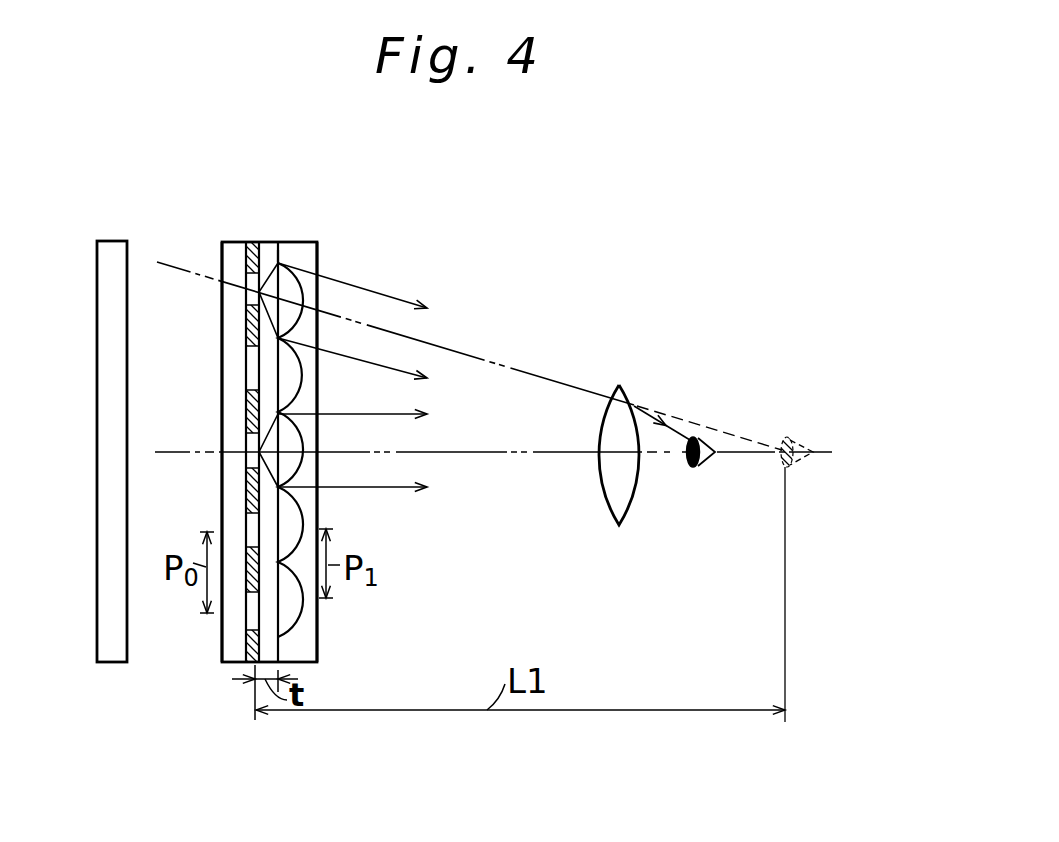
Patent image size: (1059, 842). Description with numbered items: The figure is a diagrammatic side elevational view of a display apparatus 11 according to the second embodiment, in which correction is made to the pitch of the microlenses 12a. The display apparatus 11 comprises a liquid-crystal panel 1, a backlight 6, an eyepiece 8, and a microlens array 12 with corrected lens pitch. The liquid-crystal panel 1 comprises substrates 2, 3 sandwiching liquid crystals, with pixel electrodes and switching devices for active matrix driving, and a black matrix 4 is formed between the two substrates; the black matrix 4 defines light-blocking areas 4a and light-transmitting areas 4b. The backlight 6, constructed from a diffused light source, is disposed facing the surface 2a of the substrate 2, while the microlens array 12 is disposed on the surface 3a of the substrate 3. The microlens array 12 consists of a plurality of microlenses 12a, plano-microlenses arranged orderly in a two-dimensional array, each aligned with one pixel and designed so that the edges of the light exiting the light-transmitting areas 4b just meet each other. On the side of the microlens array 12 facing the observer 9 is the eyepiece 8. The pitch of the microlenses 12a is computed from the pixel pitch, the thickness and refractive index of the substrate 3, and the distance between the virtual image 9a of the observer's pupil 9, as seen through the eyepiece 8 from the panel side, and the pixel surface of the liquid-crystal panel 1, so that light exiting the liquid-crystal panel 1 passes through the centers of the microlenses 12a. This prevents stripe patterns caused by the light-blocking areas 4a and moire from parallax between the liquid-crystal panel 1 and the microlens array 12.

The liquid-crystal panel 1 is at (286, 389).
The substrate 2 is at (200, 421).
The surface of substrate 2a is at (227, 256).
The substrate 3 is at (342, 419).
The surface of substrate 3a is at (288, 256).
The black matrix 4 is at (214, 421).
The light-blocking areas 4a is at (247, 333).
The light-transmitting areas 4b is at (247, 367).
The backlight 6 is at (110, 250).
The eyepiece 8 is at (619, 502).
The observer 9 is at (693, 436).
The virtual image of observer's pupil 9a is at (786, 436).
The display apparatus 11 is at (580, 223).
The microlens array 12 is at (348, 426).
The microlenses 12a is at (296, 290).